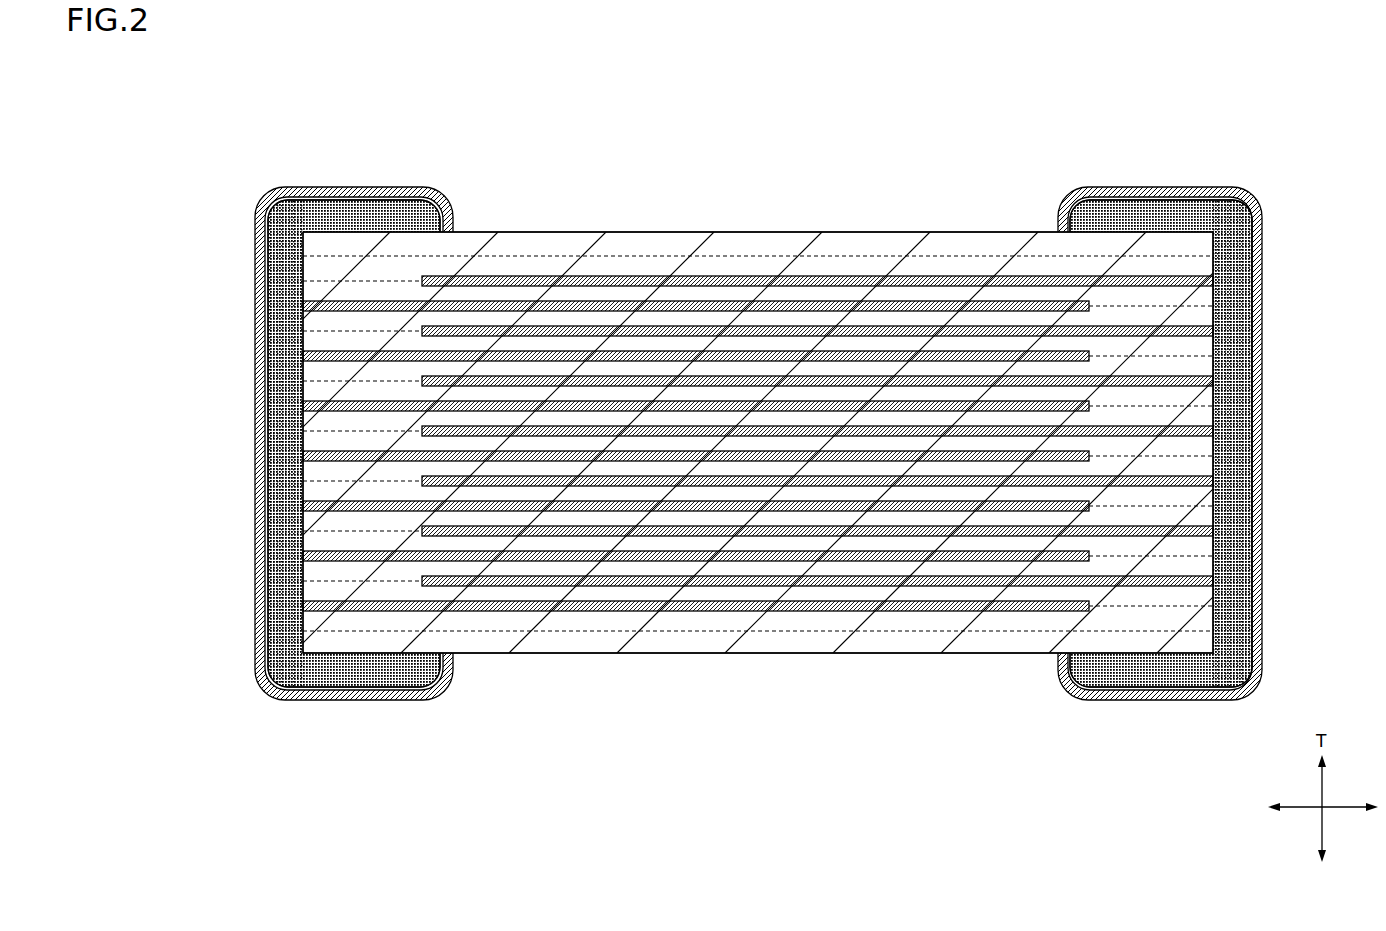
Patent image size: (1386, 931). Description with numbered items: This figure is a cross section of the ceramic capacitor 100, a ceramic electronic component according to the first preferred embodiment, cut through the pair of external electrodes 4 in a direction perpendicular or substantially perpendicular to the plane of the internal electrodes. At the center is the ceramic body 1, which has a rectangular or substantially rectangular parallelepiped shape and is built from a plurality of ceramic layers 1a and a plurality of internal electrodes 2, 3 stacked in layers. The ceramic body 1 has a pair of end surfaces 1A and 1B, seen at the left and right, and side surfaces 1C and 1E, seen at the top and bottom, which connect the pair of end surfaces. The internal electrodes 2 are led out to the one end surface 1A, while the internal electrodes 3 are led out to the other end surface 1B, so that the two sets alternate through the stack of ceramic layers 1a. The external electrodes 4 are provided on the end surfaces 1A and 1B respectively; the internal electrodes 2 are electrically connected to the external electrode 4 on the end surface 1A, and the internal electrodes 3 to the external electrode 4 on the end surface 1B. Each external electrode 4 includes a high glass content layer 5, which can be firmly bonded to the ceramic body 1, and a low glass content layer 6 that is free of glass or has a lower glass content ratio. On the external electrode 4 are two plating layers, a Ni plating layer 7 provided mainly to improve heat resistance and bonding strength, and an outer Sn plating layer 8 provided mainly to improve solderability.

The ceramic capacitor 100 is at (201, 73).
The ceramic body 1 is at (1335, 226).
The ceramic layer 1a is at (1198, 238).
The end surface 1A is at (292, 623).
The end surface 1B is at (1230, 634).
The side surface 1C is at (735, 226).
The side surface 1E is at (745, 666).
The internal electrode 2 is at (312, 306).
The internal electrode 3 is at (422, 283).
The external electrode 4 is at (364, 96).
The high glass content layer 5 is at (293, 186).
The low glass content layer 6 is at (355, 186).
The Ni plating layer 7 is at (388, 186).
The Sn plating layer 8 is at (409, 186).